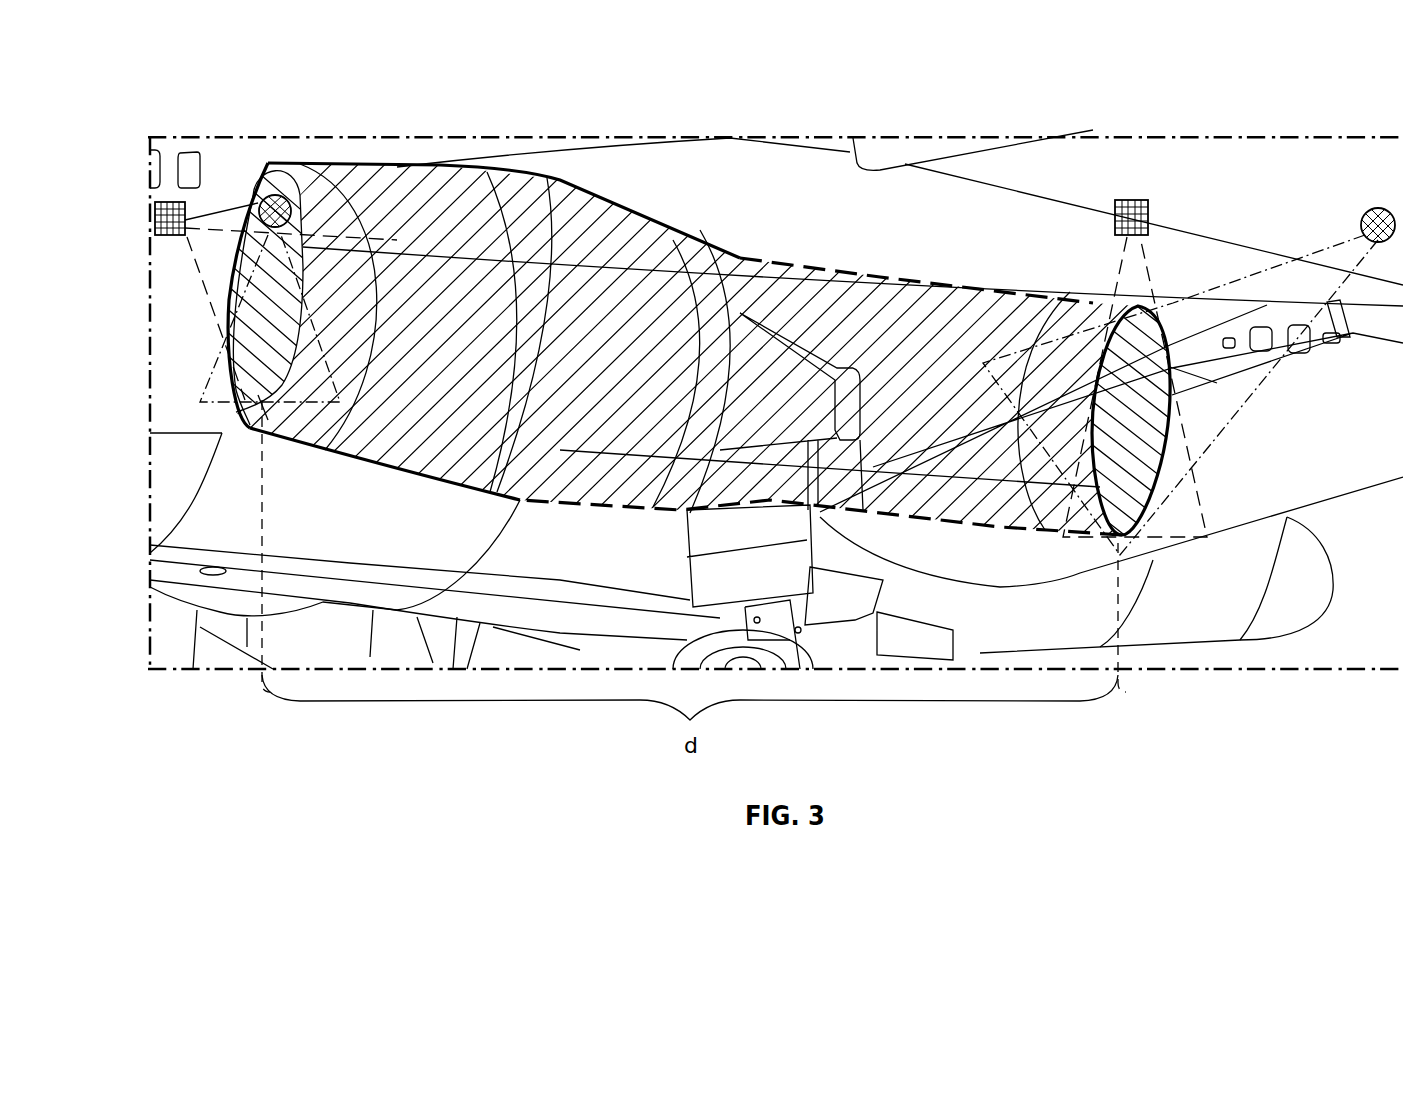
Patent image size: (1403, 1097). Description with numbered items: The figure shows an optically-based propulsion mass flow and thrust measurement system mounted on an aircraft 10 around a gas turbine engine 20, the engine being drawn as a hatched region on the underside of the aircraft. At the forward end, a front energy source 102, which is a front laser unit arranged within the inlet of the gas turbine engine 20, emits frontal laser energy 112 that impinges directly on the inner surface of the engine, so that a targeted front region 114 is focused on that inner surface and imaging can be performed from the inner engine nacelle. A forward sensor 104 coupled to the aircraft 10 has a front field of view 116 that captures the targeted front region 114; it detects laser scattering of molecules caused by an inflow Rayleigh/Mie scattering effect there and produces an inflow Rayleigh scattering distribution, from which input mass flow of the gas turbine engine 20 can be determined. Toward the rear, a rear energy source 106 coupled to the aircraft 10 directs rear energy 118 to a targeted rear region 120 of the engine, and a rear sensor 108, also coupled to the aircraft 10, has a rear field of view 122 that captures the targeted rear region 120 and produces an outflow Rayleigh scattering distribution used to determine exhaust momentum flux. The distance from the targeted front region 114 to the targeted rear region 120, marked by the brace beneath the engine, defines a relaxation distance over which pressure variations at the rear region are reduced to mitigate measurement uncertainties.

The aircraft 10 is at (804, 193).
The gas turbine engine 20 is at (561, 475).
The front energy source 102 is at (283, 192).
The forward sensor 104 is at (172, 200).
The rear energy source 106 is at (1130, 200).
The rear sensor 108 is at (1378, 208).
The frontal laser energy 112 is at (268, 420).
The targeted front region 114 is at (253, 312).
The front field of view 116 is at (260, 305).
The rear energy 118 is at (1255, 395).
The targeted rear region 120 is at (1140, 426).
The rear field of view 122 is at (1187, 545).